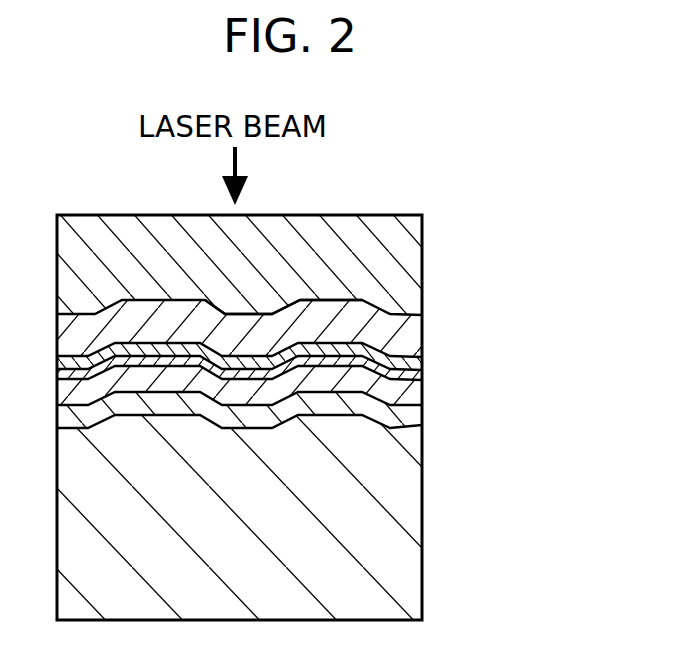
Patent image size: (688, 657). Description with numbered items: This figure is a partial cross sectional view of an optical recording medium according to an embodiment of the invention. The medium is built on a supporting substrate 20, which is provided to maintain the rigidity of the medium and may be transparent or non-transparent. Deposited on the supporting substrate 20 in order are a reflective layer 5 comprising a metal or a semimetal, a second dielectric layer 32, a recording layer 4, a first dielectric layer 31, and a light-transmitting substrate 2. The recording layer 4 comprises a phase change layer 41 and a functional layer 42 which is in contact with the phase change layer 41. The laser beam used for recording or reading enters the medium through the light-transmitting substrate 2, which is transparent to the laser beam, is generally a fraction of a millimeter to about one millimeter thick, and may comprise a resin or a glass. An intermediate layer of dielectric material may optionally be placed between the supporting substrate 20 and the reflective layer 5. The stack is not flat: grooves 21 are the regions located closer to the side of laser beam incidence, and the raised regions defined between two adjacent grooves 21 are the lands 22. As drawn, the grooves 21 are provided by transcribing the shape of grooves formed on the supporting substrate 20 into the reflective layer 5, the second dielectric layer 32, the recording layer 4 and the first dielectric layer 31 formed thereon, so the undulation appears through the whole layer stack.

The light-transmitting substrate 2 is at (417, 255).
The first dielectric layer 31 is at (415, 335).
The recording layer 4 is at (330, 342).
The phase change layer 41 is at (415, 364).
The functional layer 42 is at (415, 378).
The second dielectric layer 32 is at (415, 397).
The reflective layer 5 is at (415, 420).
The supporting substrate 20 is at (415, 473).
The groove 21 is at (318, 300).
The land 22 is at (240, 313).